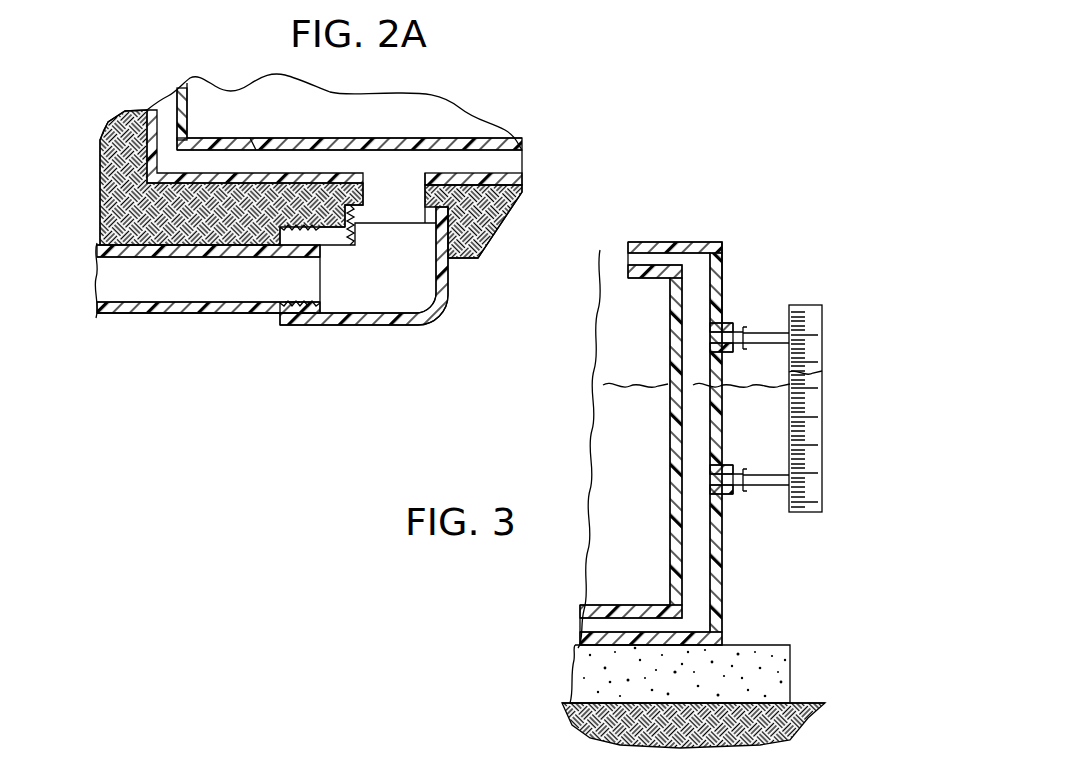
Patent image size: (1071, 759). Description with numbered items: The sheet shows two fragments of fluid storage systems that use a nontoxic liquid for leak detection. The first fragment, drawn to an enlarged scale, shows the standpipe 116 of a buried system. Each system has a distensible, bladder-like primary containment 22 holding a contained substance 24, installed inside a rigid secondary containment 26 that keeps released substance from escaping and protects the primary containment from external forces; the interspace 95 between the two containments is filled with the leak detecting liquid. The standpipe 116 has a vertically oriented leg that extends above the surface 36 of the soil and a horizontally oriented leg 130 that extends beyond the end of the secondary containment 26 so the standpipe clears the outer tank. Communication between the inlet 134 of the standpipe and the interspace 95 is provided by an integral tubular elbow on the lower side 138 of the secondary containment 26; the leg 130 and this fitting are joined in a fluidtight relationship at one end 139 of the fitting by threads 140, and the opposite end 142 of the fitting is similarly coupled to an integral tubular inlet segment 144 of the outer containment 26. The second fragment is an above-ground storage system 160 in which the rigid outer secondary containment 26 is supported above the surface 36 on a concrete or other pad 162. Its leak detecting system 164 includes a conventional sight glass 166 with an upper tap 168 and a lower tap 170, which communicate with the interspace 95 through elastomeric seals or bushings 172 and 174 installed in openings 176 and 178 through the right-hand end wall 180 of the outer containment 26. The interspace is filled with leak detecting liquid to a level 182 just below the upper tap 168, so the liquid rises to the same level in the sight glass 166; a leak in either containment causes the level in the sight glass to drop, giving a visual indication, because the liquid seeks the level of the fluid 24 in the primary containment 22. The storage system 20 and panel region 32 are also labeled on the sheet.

In FIG. 2A, the storage system 20 is at (468, 81).
In FIG. 2A, the primary containment 22 is at (516, 150).
In FIG. 3, the primary containment 22 is at (650, 248).
In FIG. 3, the contained substance 24 is at (652, 440).
In FIG. 2A, the secondary containment 26 is at (516, 190).
In FIG. 3, the secondary containment 26 is at (684, 242).
In FIG. 2A, the panel core 32 is at (415, 126).
In FIG. 3, the surface 36 is at (572, 670).
In FIG. 2A, the interspace 95 is at (256, 163).
In FIG. 2A, the standpipe 116 is at (128, 330).
In FIG. 2A, the horizontally oriented leg 130 is at (195, 320).
In FIG. 2A, the inlet 134 is at (324, 286).
In FIG. 2A, the lower side 138 is at (434, 318).
In FIG. 2A, the end of the fitting 139 is at (282, 318).
In FIG. 2A, the threads 140 is at (292, 302).
In FIG. 2A, the opposite end of the fitting 142 is at (470, 232).
In FIG. 2A, the tubular inlet segment 144 is at (357, 212).
In FIG. 3, the above-ground storage system 160 is at (778, 208).
In FIG. 3, the pad 162 is at (776, 645).
In FIG. 3, the leak detecting system 164 is at (830, 388).
In FIG. 3, the sight glass 166 is at (822, 430).
In FIG. 3, the upper tap 168 is at (756, 336).
In FIG. 3, the lower tap 170 is at (762, 488).
In FIG. 3, the elastomeric seal or bushing 172 is at (728, 324).
In FIG. 3, the elastomeric seal or bushing 174 is at (730, 494).
In FIG. 3, the opening 176 is at (710, 329).
In FIG. 3, the opening 178 is at (710, 490).
In FIG. 3, the right-hand end wall 180 is at (722, 280).
In FIG. 3, the level 182 is at (741, 400).